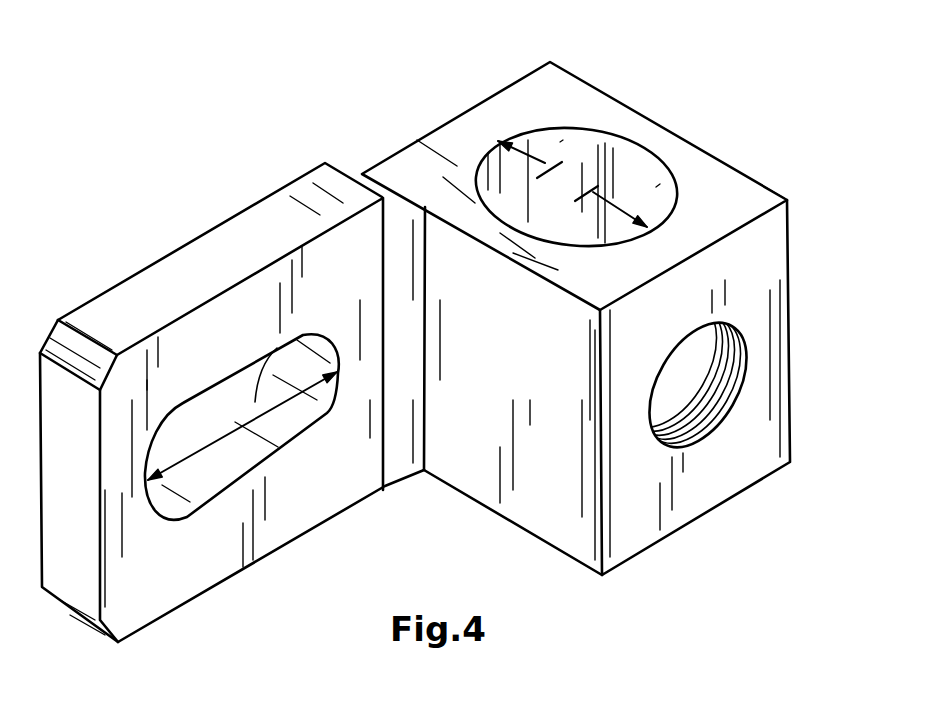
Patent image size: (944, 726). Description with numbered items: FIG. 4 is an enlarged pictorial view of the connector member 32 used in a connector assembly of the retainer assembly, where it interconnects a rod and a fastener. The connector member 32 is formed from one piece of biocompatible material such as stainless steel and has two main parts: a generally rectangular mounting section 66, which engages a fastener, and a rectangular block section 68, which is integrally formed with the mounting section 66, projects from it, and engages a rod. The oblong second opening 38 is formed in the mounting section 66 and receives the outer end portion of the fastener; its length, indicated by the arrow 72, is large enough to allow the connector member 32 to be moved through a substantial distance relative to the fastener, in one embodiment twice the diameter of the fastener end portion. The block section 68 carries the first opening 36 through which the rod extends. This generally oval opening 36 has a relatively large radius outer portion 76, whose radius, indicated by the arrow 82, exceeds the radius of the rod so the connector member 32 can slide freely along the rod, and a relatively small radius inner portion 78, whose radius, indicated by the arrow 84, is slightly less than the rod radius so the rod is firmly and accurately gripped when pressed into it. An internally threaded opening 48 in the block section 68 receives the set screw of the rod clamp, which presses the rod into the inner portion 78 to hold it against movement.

The connector member 32 is at (122, 168).
The mounting section 66 is at (122, 281).
The length of the oblong opening 72 is at (262, 412).
The second opening 38 is at (218, 465).
The radius of the inner portion 84 is at (498, 141).
The small radius inner portion 78 is at (560, 142).
The first opening 36 is at (630, 172).
The large radius outer portion 76 is at (658, 185).
The block section 68 is at (772, 190).
The radius of the outer portion 82 is at (605, 205).
The internally threaded opening 48 is at (728, 358).